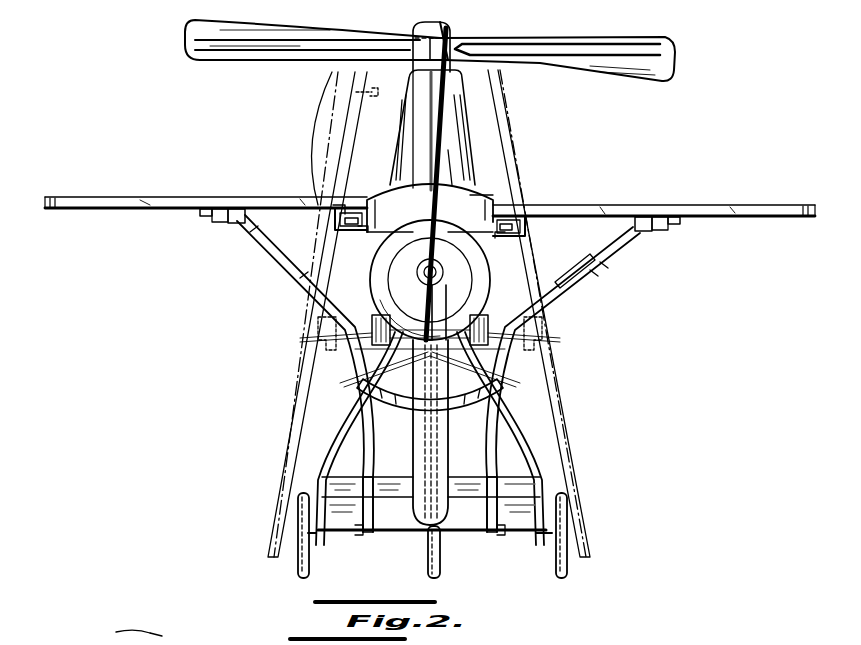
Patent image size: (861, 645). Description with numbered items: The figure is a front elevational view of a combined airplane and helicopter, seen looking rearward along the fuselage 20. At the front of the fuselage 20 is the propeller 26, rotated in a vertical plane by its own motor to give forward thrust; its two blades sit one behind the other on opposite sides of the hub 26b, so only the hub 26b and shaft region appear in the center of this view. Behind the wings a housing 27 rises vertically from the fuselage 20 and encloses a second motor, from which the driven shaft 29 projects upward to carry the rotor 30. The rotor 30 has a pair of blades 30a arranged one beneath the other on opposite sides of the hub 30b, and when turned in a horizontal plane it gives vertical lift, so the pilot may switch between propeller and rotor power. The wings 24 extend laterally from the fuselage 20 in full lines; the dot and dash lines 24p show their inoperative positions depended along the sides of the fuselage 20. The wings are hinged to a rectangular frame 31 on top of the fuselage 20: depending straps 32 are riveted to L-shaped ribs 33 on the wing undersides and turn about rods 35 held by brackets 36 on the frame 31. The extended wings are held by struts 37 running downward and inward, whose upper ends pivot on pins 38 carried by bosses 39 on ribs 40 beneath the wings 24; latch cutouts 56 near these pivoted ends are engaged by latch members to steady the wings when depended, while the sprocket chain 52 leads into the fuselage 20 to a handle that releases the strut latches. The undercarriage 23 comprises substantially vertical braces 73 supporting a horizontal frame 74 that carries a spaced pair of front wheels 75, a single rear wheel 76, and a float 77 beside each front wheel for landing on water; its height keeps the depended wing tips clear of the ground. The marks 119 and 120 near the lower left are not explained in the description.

The fuselage 20 is at (470, 298).
The undercarriage 23 is at (549, 406).
The wings 24 is at (95, 198).
The dot and dash lines 24p is at (593, 402).
The propeller 26 is at (433, 122).
The hub of the propeller 26b is at (408, 290).
The housing 27 is at (480, 146).
The driven shaft 29 is at (426, 21).
The rotor 30 is at (664, 38).
The blades of the rotor 30a is at (273, 48).
The hub of the rotor 30b is at (455, 34).
The rectangular frame 31 is at (493, 215).
The depending straps 32 is at (340, 219).
The L-shaped ribs 33 is at (336, 208).
The rods 35 is at (350, 222).
The brackets 36 is at (362, 232).
The struts 37 is at (575, 284).
The pins 38 is at (236, 224).
The bosses 39 is at (222, 224).
The ribs 40 is at (206, 218).
The sprocket chain 52 is at (372, 312).
The latch cutouts 56 is at (272, 254).
The braces 73 is at (320, 466).
The horizontal frame 74 is at (368, 530).
The front wheels 75 is at (303, 576).
The rear wheel 76 is at (440, 576).
The float 77 is at (393, 480).
The page annotation 119 is at (122, 630).
The page annotation 120 is at (172, 635).